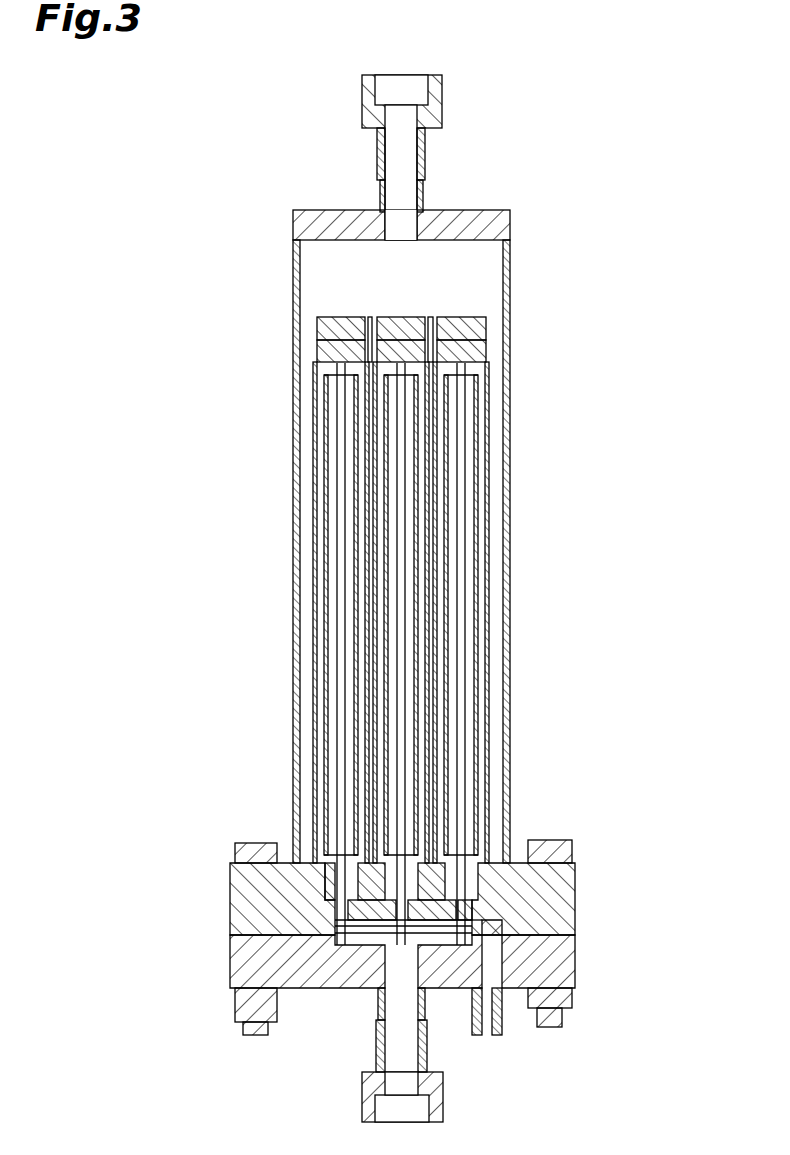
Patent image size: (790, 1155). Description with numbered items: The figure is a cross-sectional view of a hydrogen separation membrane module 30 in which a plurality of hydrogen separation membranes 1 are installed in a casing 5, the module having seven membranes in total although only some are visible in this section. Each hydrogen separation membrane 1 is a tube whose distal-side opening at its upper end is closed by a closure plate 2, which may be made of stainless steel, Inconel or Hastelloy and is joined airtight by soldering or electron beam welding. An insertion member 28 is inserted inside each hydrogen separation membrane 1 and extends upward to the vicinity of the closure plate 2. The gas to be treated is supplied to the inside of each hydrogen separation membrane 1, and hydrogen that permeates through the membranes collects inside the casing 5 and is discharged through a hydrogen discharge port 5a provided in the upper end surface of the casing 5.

The module 30 is at (613, 127).
The casing 5 is at (511, 619).
The hydrogen discharge port 5a is at (385, 250).
The closure plate 2 is at (453, 360).
The insertion member 28 is at (345, 480).
The hydrogen separation membrane 1 is at (343, 777).